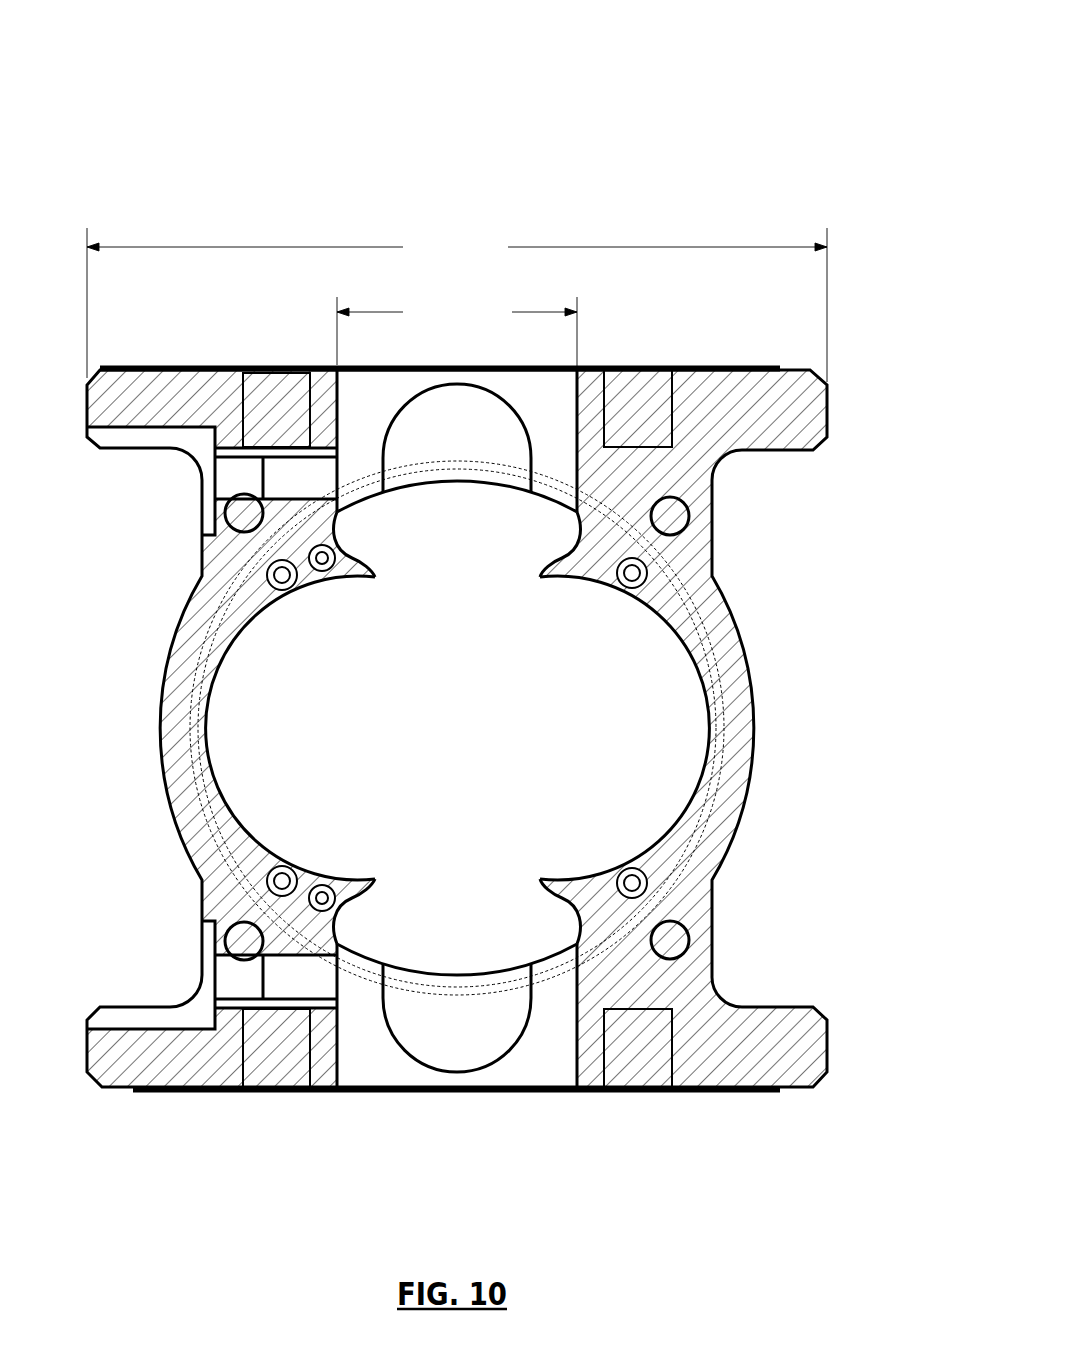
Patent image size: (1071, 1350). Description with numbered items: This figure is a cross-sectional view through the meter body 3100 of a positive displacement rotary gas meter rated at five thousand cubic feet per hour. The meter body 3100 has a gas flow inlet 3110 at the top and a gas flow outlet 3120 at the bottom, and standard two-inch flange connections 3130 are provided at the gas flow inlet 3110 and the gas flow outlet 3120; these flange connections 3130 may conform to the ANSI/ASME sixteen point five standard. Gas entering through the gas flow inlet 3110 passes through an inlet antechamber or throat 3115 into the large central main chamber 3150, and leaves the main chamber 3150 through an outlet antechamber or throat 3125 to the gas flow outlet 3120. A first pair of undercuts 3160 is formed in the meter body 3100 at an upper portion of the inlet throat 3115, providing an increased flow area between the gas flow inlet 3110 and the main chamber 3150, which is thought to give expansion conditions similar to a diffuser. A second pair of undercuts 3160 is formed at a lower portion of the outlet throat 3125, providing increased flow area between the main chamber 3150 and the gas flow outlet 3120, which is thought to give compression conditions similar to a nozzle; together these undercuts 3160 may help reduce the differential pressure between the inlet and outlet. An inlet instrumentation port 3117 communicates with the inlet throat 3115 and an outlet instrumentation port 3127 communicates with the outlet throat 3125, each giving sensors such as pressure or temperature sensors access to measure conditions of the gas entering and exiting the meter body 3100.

The meter body 3100 is at (768, 55).
The gas flow inlet 3110 is at (553, 390).
The inlet antechamber or throat 3115 is at (500, 497).
The inlet instrumentation port 3117 is at (233, 468).
The gas flow outlet 3120 is at (532, 1067).
The outlet antechamber or throat 3125 is at (513, 957).
The outlet instrumentation port 3127 is at (228, 982).
The flange connections 3130 is at (740, 365).
The main chamber 3150 is at (672, 718).
The undercuts 3160 is at (445, 438).